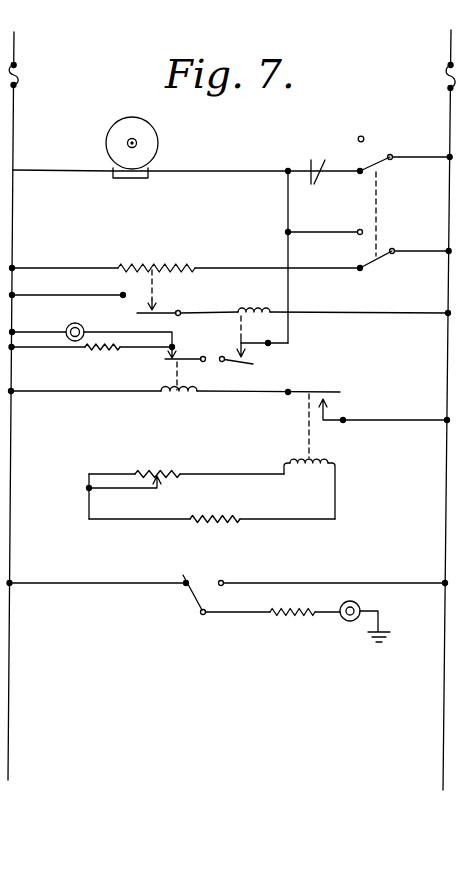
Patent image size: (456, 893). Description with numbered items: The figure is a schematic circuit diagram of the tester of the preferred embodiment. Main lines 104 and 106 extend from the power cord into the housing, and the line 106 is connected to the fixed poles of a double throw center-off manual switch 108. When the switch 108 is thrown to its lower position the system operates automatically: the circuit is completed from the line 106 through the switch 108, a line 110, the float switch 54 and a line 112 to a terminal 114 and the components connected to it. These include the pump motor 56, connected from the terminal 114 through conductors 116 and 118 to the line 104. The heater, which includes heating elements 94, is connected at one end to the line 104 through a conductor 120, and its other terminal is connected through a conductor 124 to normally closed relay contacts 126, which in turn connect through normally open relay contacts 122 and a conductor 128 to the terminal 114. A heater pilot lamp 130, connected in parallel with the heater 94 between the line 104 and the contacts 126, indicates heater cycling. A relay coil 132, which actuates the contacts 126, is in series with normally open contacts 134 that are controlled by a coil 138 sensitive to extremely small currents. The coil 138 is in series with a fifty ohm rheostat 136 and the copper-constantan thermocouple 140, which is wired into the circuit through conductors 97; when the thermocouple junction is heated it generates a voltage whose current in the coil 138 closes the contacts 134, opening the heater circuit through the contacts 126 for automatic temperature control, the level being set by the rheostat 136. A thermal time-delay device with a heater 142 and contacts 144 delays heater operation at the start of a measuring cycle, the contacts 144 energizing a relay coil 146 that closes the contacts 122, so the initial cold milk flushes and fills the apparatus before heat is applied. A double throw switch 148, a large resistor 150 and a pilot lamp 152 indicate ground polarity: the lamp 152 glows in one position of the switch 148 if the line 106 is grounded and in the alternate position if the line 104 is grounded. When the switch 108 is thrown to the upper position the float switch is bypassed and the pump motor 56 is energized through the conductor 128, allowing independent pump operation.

The main line 104 is at (14, 48).
The main line 106 is at (451, 50).
The pump motor 56 is at (148, 138).
The conductor 118 is at (60, 171).
The conductor 116 is at (200, 171).
The terminal 114 is at (288, 169).
The line 112 is at (308, 168).
The float switch 54 is at (318, 163).
The line 110 is at (345, 171).
The manual switch 108 is at (377, 203).
The conductor 128 is at (288, 290).
The heater 142 is at (150, 265).
The contacts 144 is at (157, 306).
The relay coil 146 is at (238, 306).
The heater pilot lamp 130 is at (70, 325).
The conductor 120 is at (33, 349).
The heating elements 94 is at (88, 350).
The conductor 124 is at (142, 349).
The normally closed relay contacts 126 is at (180, 357).
The normally open relay contacts 122 is at (257, 354).
The relay coil 132 is at (172, 395).
The normally open contacts 134 is at (330, 400).
The rheostat 136 is at (155, 470).
The coil 138 is at (318, 457).
The thermocouple 140 is at (200, 517).
The conductor 97 is at (145, 521).
The double throw switch 148 is at (193, 600).
The large resistor 150 is at (283, 618).
The pilot lamp 152 is at (350, 622).